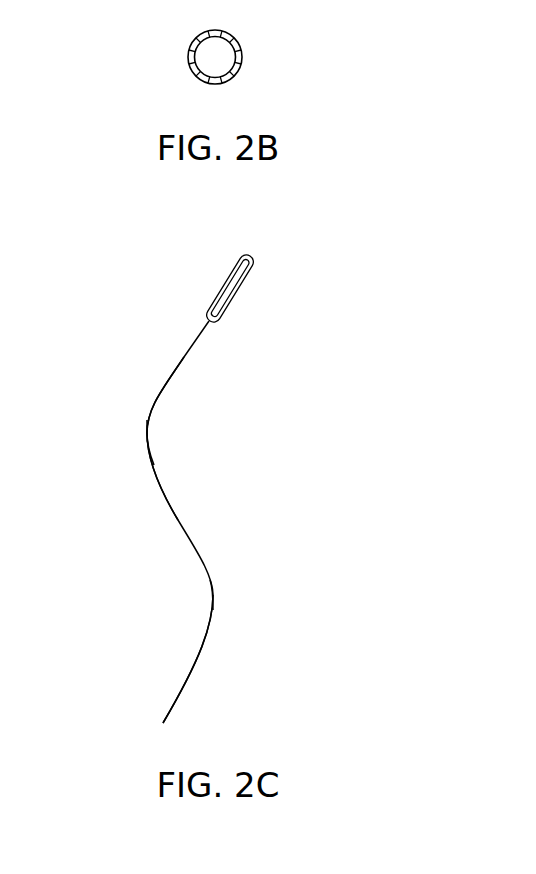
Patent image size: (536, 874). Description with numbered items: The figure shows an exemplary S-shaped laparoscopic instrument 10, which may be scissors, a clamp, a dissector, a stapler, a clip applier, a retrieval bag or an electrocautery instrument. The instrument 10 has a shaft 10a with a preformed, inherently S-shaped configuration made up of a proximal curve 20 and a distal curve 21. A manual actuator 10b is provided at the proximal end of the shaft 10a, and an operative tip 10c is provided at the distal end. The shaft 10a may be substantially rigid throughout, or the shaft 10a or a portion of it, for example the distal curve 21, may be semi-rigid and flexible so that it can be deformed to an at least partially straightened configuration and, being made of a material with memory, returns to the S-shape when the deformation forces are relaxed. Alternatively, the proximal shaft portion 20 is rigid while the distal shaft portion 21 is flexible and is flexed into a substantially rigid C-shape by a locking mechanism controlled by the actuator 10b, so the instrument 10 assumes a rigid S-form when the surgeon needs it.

The S-shaped laparoscopic instrument 10 is at (147, 525).
The shaft 10a is at (154, 462).
The manual actuator 10b is at (243, 283).
The operative tip 10c is at (176, 700).
The proximal curve 20 is at (147, 438).
The distal curve 21 is at (213, 592).